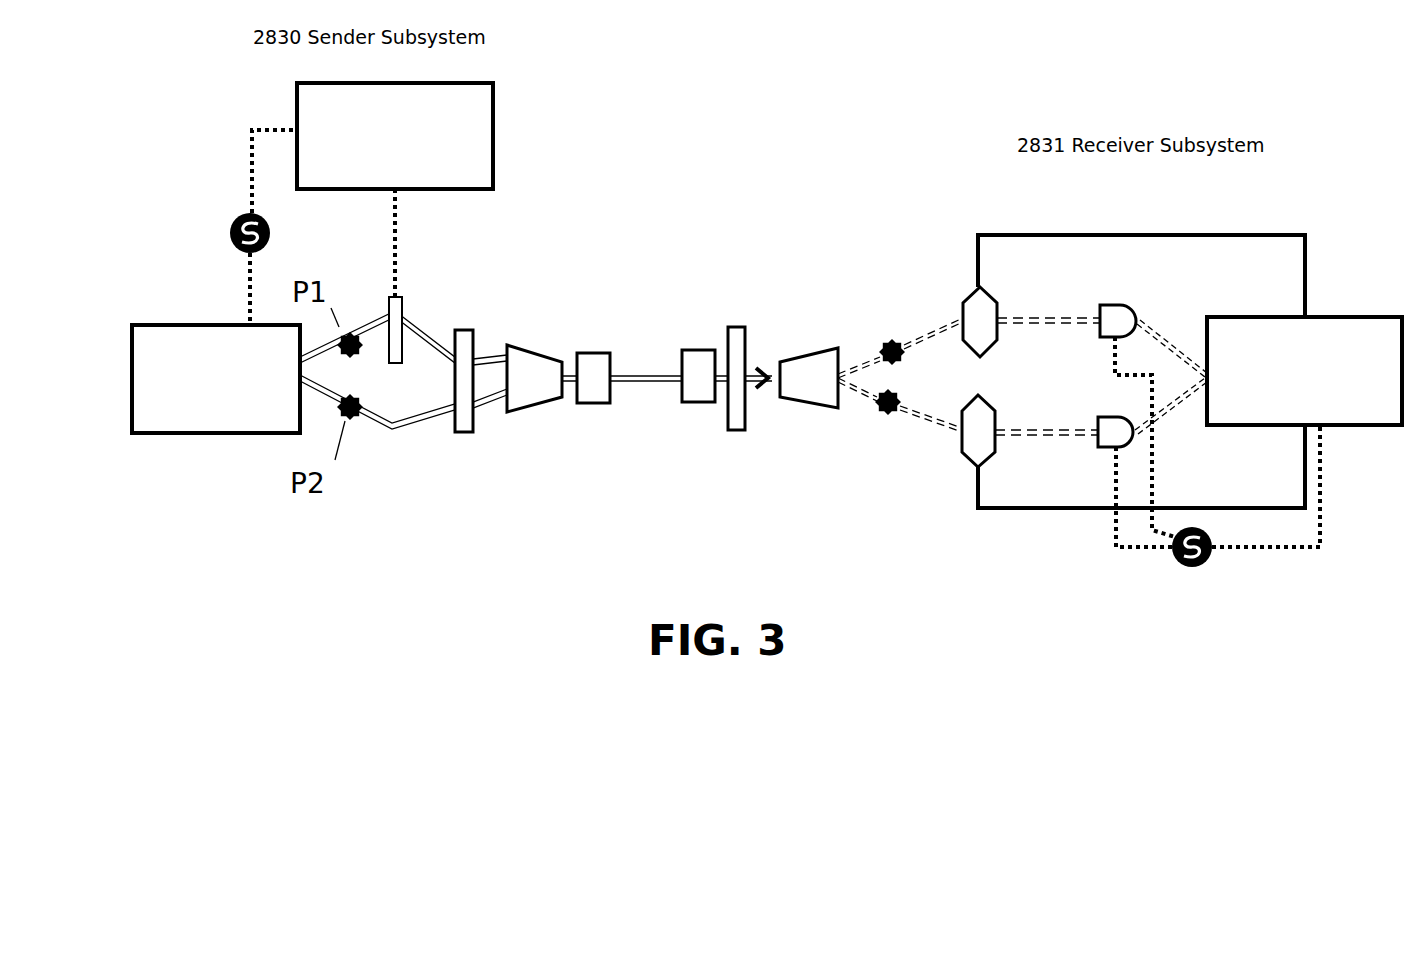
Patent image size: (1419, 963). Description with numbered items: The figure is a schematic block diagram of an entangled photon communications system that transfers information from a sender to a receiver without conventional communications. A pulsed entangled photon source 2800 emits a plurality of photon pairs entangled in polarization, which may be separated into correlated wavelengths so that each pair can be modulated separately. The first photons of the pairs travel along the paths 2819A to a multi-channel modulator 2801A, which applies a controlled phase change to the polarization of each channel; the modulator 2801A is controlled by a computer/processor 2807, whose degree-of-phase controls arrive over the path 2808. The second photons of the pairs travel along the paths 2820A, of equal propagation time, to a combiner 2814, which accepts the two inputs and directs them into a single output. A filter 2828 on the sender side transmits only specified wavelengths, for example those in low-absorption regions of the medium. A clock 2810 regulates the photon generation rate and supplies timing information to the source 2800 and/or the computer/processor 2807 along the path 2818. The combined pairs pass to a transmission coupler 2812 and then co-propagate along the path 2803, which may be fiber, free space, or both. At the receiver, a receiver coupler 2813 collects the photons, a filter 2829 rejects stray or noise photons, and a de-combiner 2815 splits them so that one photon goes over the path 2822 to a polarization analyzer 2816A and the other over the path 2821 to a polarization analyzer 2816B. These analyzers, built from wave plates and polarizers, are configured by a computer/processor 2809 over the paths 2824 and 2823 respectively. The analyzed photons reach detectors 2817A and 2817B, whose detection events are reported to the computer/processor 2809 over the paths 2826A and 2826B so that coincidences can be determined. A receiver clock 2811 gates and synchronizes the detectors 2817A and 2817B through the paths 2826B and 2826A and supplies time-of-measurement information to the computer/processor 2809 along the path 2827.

The pulsed entangled photon source 2800 is at (183, 316).
The multi-channel modulator 2801A is at (415, 295).
The path 2803 is at (625, 390).
The computer/processor 2807 is at (395, 136).
The path 2808 is at (410, 247).
The computer/processor 2809 is at (1304, 371).
The clock 2810 is at (217, 228).
The clock 2811 is at (1184, 561).
The transmission coupler 2812 is at (592, 408).
The receiver coupler 2813 is at (675, 350).
The combiner 2814 is at (540, 350).
The de-combiner 2815 is at (816, 378).
The polarization analyzer 2816A is at (957, 287).
The polarization analyzer 2816B is at (953, 457).
The detector 2817A is at (1110, 300).
The detector 2817B is at (1098, 447).
The path 2818 is at (237, 138).
The paths 2819A is at (366, 306).
The paths 2820A is at (398, 446).
The path 2821 is at (857, 400).
The path 2822 is at (858, 360).
The path 2823 is at (1013, 513).
The path 2824 is at (1101, 226).
The path 2826A is at (1108, 535).
The path 2826B is at (1100, 364).
The path 2827 is at (1330, 500).
The filter 2828 is at (463, 441).
The filter 2829 is at (736, 440).